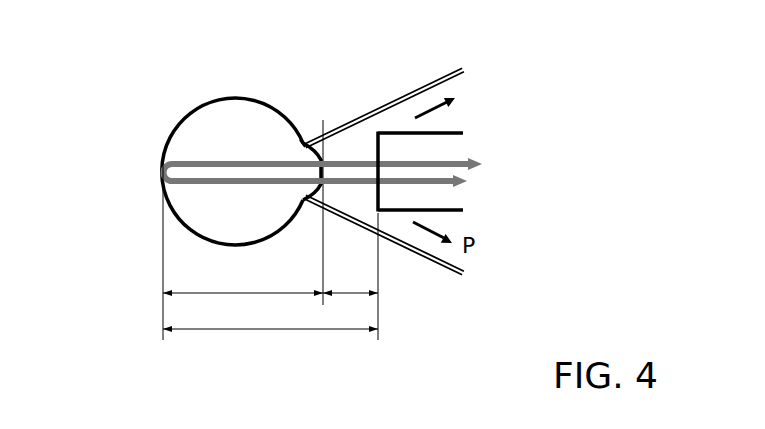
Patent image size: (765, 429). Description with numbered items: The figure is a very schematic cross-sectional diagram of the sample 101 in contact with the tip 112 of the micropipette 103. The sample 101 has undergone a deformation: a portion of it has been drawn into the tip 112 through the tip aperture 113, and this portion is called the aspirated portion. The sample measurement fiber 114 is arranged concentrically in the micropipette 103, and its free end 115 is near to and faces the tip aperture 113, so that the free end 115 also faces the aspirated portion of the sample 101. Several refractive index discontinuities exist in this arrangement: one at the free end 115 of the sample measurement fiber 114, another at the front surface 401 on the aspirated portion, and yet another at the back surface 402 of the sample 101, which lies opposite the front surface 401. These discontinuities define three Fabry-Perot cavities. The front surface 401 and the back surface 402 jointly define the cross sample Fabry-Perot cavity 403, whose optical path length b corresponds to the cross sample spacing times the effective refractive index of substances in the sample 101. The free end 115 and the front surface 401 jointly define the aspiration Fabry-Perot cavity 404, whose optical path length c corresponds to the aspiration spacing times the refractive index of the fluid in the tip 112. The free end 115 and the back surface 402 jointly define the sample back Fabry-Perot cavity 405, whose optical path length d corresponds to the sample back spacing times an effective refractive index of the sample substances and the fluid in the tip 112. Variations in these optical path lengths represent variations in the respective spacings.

The sample 101 is at (226, 98).
The back surface 402 is at (163, 157).
The tip aperture 113 is at (303, 143).
The front surface 401 is at (323, 123).
The tip 112 is at (415, 90).
The sample measurement fiber 114 is at (458, 131).
The free end 115 is at (380, 214).
The micropipette 103 is at (517, 155).
The cross sample Fabry-Perot cavity 403 is at (236, 300).
The aspiration Fabry-Perot cavity 404 is at (352, 298).
The sample back Fabry-Perot cavity 405 is at (283, 333).